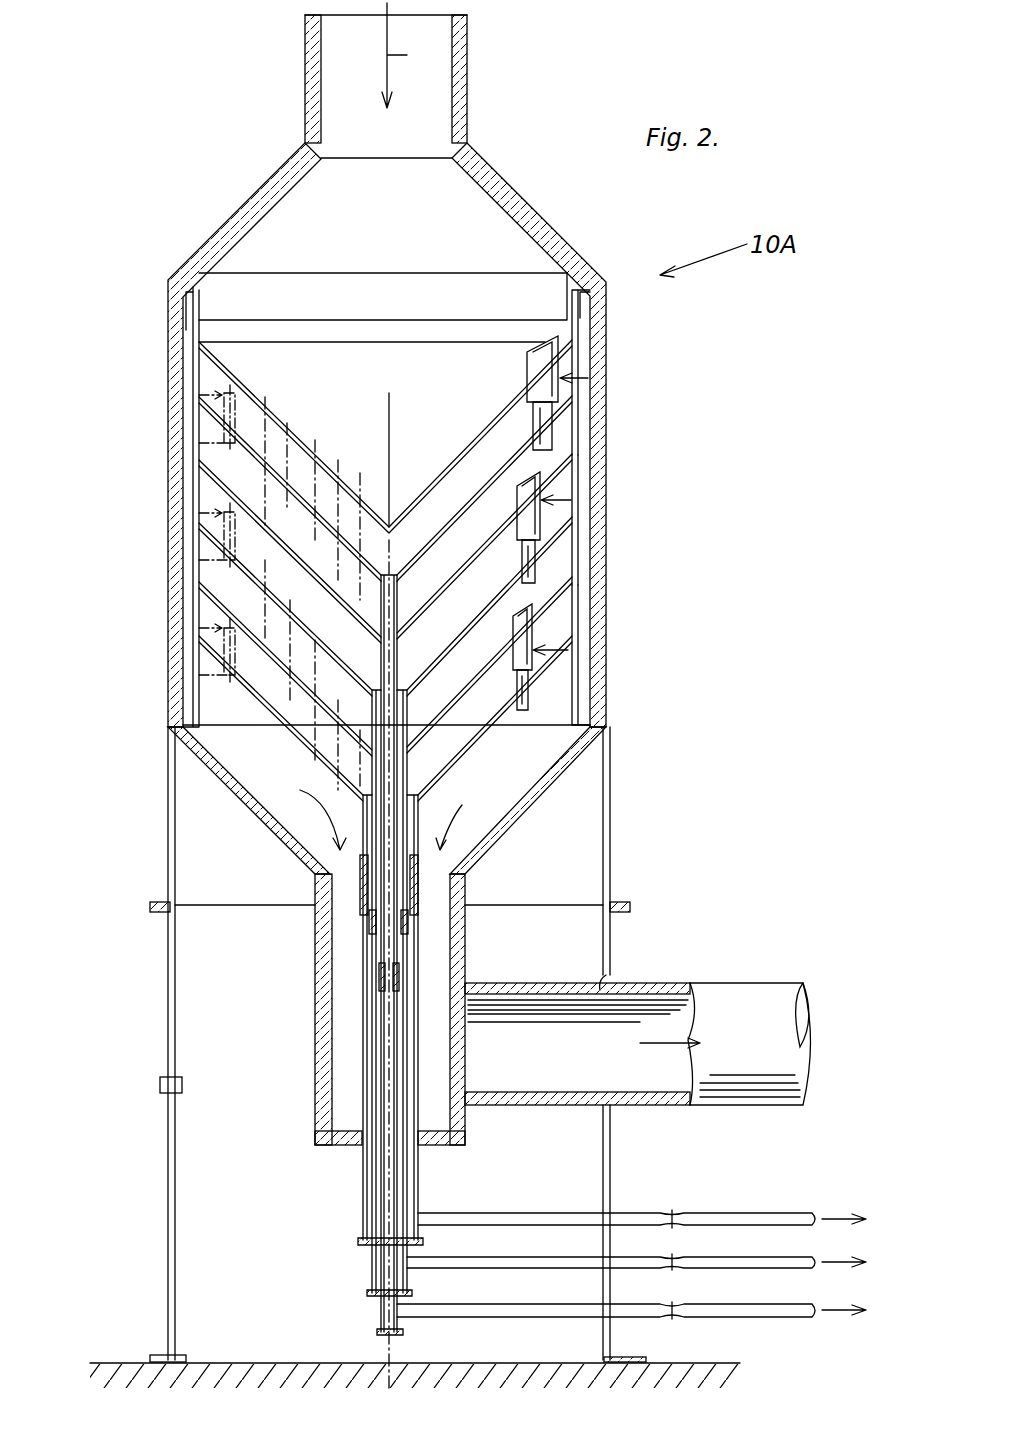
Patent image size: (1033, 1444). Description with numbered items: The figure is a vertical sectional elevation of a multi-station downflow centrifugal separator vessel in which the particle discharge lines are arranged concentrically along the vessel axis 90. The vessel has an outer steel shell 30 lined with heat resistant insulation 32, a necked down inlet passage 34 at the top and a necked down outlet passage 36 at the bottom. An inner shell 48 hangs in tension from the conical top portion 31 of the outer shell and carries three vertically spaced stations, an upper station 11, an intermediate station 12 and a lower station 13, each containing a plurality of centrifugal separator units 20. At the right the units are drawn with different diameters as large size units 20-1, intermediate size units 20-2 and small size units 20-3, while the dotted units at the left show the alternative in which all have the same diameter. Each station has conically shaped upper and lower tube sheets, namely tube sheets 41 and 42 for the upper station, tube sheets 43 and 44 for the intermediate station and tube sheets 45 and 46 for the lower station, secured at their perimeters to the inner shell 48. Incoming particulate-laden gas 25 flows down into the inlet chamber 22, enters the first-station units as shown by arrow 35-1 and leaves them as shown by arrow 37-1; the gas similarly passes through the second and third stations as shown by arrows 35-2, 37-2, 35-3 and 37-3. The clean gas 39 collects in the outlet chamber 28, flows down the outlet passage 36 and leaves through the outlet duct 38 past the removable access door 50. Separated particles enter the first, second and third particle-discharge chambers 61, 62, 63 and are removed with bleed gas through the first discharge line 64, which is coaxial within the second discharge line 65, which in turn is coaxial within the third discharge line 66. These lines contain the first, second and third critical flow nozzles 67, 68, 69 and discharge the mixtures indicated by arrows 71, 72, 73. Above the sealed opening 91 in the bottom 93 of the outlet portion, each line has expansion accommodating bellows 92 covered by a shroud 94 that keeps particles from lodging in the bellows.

The upper station 11 is at (594, 370).
The intermediate station 12 is at (594, 502).
The lower station 13 is at (594, 617).
The centrifugal separator units 20 is at (193, 392).
The large size units 20-1 is at (588, 378).
The intermediate size units 20-2 is at (571, 500).
The small size units 20-3 is at (568, 650).
The inlet chamber 22 is at (402, 217).
The incoming particulate-laden gas 25 is at (411, 55).
The outlet chamber 28 is at (513, 773).
The outer steel shell 30 is at (172, 663).
The conical top portion 31 is at (248, 200).
The heat resistant insulation 32 is at (203, 310).
The inlet passage 34 is at (332, 58).
The gas inflow arrow to first-station units 35-1 is at (535, 341).
The gas inflow arrow to second-station units 35-2 is at (533, 466).
The gas inflow arrow to third-station units 35-3 is at (524, 600).
The outlet passage 36 is at (332, 990).
The gas outflow arrow from first-station units 37-1 is at (556, 450).
The gas outflow arrow from second-station units 37-2 is at (540, 586).
The gas outflow arrow from third-station units 37-3 is at (526, 723).
The outlet duct 38 is at (522, 1107).
The clean gas 39 is at (300, 790).
The upper tube sheet of upper station 41 is at (472, 442).
The lower tube sheet of upper station 42 is at (470, 502).
The upper tube sheet of intermediate station 43 is at (484, 546).
The lower tube sheet of intermediate station 44 is at (470, 630).
The upper tube sheet of lower station 45 is at (470, 704).
The lower tube sheet of lower station 46 is at (482, 742).
The inner shell 48 is at (193, 420).
The removable access door 50 is at (166, 1142).
The first particle-discharge chamber 61 is at (420, 553).
The second particle-discharge chamber 62 is at (432, 658).
The third particle-discharge chamber 63 is at (437, 773).
The first discharge line 64 is at (398, 893).
The second discharge line 65 is at (400, 950).
The third discharge line 66 is at (366, 1058).
The first critical flow nozzle 67 is at (690, 1304).
The second critical flow nozzle 68 is at (690, 1260).
The third critical flow nozzle 69 is at (688, 1212).
The first bleed gas and particle discharge flow 71 is at (838, 1310).
The second bleed gas and particle discharge flow 72 is at (838, 1262).
The third bleed gas and particle discharge flow 73 is at (838, 1219).
The vessel axis 90 is at (389, 410).
The sealed opening 91 is at (430, 1145).
The expansion accommodating bellows 92 is at (372, 920).
The bottom of outlet portion 93 is at (346, 1146).
The shroud 94 is at (418, 868).